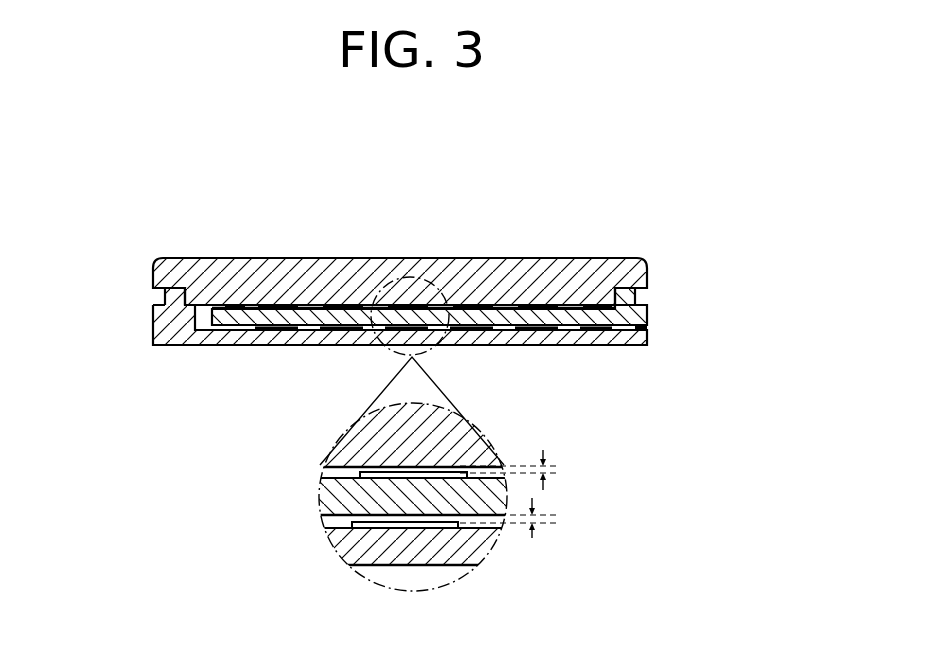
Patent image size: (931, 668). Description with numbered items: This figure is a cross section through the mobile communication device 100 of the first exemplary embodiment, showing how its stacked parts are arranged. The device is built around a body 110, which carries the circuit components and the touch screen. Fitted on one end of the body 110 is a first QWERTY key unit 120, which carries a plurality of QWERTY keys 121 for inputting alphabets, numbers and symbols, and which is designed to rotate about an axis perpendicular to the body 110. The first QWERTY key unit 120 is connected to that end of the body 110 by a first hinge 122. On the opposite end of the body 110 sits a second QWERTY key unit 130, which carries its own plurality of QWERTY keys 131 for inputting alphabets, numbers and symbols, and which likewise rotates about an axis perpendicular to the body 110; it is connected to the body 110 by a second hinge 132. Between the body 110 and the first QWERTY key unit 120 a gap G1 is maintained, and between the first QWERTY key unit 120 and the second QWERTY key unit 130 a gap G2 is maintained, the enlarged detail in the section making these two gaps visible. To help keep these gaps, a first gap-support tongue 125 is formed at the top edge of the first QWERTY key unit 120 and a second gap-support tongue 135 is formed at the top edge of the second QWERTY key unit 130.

The mobile communication device 100 is at (513, 205).
The body 110 is at (640, 272).
The first QWERTY key unit 120 is at (627, 313).
The QWERTY keys 121 is at (373, 471).
The first hinge 122 is at (632, 294).
The first gap-support tongue 125 is at (221, 307).
The second QWERTY key unit 130 is at (643, 338).
The QWERTY keys 131 is at (372, 522).
The second hinge 132 is at (164, 292).
The second gap-support tongue 135 is at (641, 328).
The gap G1 is at (510, 458).
The gap G2 is at (510, 533).